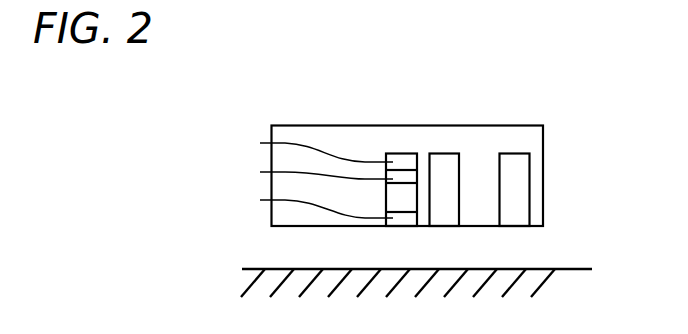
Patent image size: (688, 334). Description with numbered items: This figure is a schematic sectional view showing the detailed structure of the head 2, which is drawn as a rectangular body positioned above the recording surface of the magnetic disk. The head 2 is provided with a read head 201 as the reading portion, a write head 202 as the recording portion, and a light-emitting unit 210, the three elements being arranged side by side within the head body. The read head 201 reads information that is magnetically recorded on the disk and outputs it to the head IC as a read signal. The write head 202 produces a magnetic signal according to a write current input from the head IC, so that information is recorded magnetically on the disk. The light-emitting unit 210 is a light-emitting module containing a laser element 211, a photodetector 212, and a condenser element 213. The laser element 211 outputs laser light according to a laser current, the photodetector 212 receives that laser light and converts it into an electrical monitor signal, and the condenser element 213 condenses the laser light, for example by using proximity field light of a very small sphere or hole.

The head 2 is at (295, 125).
The read head 201 is at (525, 169).
The write head 202 is at (453, 153).
The light-emitting unit 210 is at (408, 153).
The laser element 211 is at (304, 171).
The photodetector 212 is at (304, 146).
The condenser element 213 is at (304, 201).